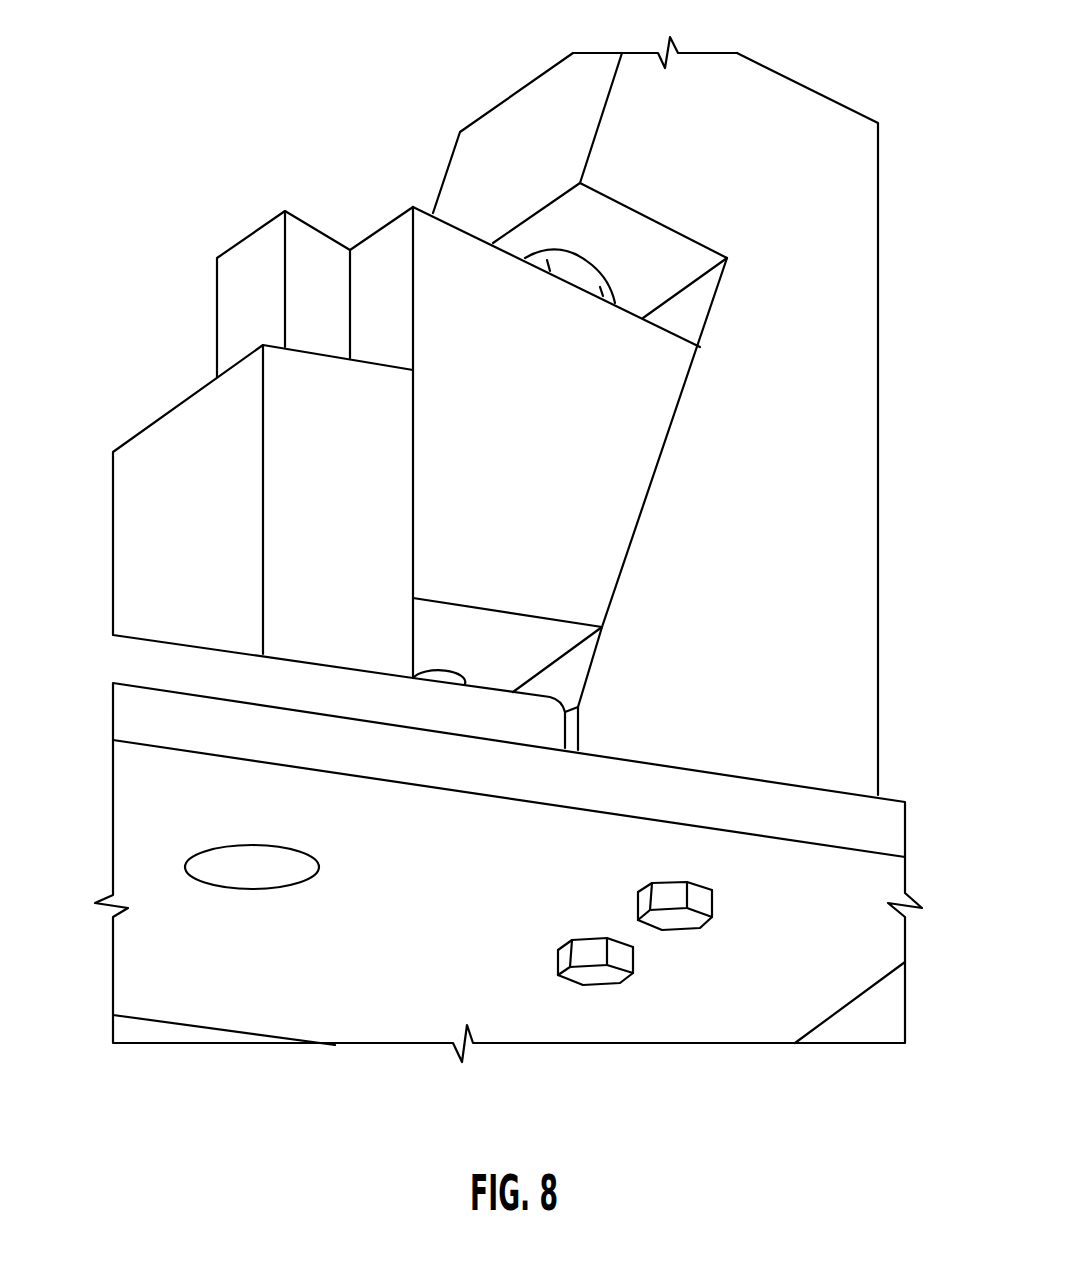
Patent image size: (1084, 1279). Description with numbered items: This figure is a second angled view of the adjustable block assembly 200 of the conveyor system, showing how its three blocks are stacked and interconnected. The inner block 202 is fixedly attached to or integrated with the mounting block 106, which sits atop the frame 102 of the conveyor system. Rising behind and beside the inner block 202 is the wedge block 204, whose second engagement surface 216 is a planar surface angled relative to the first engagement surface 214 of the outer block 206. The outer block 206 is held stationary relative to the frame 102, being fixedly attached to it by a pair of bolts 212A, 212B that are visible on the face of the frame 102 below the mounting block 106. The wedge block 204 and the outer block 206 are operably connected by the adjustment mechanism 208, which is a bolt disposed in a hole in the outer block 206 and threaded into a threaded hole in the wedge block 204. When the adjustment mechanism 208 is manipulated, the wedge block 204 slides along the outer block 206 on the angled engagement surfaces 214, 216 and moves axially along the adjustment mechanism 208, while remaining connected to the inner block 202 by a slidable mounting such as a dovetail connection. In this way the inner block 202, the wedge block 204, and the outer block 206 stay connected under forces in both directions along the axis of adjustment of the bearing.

The adjustable block assembly 200 is at (883, 473).
The outer block 206 is at (833, 190).
The first engagement surface 214 is at (700, 315).
The wedge block 204 is at (435, 245).
The adjustment mechanism 208 is at (590, 278).
The second engagement surface 216 is at (250, 305).
The inner block 202 is at (157, 500).
The mounting block 106 is at (137, 658).
The frame 102 is at (825, 953).
The bolt 212A is at (673, 921).
The bolt 212B is at (593, 975).